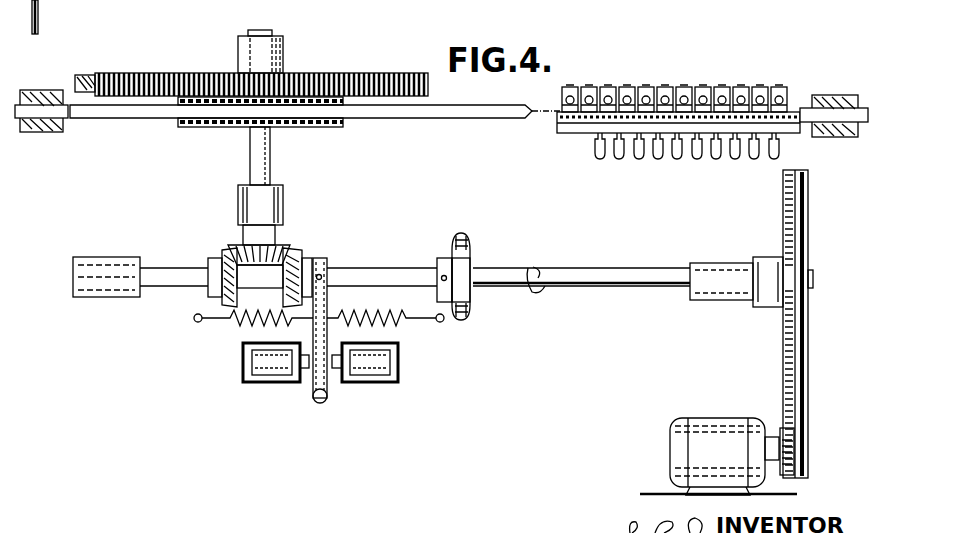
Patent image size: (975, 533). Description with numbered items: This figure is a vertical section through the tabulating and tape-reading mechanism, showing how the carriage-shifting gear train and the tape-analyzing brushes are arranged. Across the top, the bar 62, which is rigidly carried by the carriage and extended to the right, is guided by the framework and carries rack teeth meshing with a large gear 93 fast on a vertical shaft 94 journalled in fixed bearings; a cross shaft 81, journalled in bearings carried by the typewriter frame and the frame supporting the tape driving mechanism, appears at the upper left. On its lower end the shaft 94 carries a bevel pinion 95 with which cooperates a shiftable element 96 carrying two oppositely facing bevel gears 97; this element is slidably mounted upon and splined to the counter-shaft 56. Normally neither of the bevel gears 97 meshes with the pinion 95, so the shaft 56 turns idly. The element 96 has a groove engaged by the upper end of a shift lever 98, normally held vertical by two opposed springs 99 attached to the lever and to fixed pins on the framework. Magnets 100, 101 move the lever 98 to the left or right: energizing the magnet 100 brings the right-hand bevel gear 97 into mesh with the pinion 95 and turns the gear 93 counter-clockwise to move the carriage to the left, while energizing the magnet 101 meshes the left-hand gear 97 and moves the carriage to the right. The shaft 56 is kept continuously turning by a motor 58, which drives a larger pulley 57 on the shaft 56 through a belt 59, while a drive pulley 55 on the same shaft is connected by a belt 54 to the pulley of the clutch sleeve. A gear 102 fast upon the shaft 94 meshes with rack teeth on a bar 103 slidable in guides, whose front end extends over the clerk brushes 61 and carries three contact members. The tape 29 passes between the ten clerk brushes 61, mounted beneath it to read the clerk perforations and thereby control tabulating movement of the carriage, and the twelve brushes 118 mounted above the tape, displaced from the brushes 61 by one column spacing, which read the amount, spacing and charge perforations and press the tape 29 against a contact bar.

The cross shaft 81 is at (40, 22).
The bar 62 is at (78, 81).
The large gear 93 is at (322, 75).
The vertical shaft 94 is at (270, 163).
The bevel pinion 95 is at (288, 249).
The shiftable element 96 is at (327, 259).
The bevel gears 97 is at (283, 296).
The shift lever 98 is at (325, 333).
The opposed springs 99 is at (240, 322).
The magnet 100 is at (257, 382).
The magnet 101 is at (377, 382).
The gear 102 is at (343, 128).
The bar 103 is at (388, 114).
The tape 29 is at (552, 125).
The brushes 118 is at (630, 86).
The clerk brushes 61 is at (773, 158).
The belt 54 is at (462, 320).
The drive pulley 55 is at (473, 260).
The counter-shaft 56 is at (588, 288).
The larger pulley 57 is at (783, 352).
The motor 58 is at (708, 420).
The belt 59 is at (790, 405).